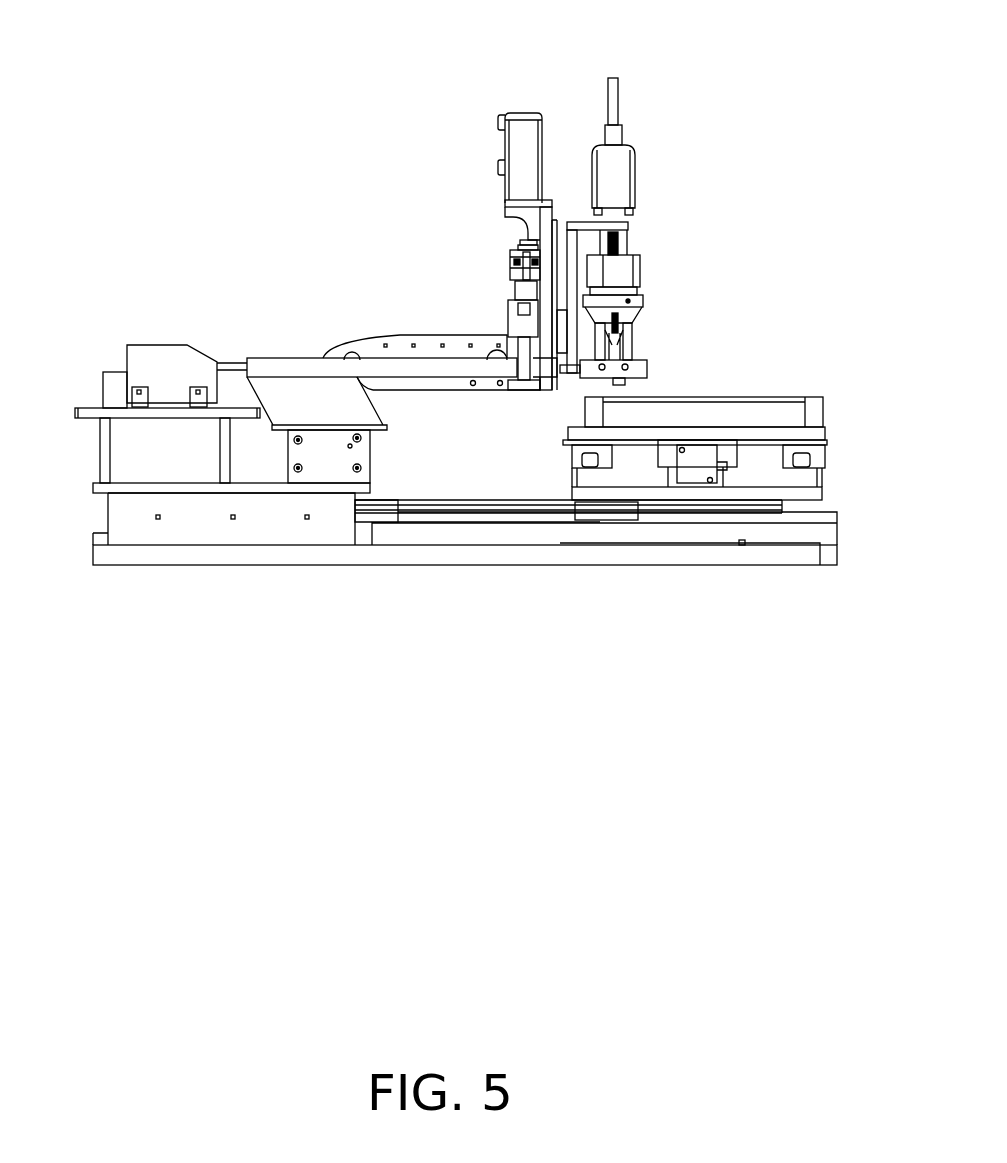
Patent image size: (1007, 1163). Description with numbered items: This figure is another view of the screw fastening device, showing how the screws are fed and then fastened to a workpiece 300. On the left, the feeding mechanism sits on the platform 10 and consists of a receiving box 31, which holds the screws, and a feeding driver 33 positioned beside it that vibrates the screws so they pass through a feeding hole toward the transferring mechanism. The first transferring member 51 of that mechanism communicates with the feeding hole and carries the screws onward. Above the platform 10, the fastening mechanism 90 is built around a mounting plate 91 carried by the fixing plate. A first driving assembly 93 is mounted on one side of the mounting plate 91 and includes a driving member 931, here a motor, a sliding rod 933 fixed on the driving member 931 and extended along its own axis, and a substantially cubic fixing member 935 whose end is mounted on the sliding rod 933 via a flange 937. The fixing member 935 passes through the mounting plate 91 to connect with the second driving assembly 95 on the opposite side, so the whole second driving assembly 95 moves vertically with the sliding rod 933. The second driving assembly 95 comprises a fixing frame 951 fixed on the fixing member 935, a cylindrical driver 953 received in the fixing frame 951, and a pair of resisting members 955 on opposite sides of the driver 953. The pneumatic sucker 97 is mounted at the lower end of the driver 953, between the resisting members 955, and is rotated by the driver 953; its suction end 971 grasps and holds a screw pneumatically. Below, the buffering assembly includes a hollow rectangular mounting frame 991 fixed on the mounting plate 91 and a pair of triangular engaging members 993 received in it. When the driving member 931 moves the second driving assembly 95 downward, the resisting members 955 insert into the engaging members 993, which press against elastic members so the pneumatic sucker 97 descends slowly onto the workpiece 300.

The platform 10 is at (208, 530).
The receiving box 31 is at (163, 353).
The feeding driver 33 is at (110, 380).
The first transferring member 51 is at (292, 370).
The fastening mechanism 90 is at (521, 72).
The mounting plate 91 is at (552, 260).
The first driving assembly 93 is at (469, 251).
The driving member 931 is at (522, 155).
The sliding rod 933 is at (513, 240).
The fixing member 935 is at (545, 303).
The flange 937 is at (478, 335).
The second driving assembly 95 is at (675, 233).
The fixing frame 951 is at (572, 253).
The driver 953 is at (618, 178).
The resisting members 955 is at (632, 333).
The pneumatic sucker 97 is at (630, 352).
The suction end 971 is at (618, 380).
The mounting frame 991 is at (586, 368).
The engaging members 993 is at (600, 357).
The workpiece 300 is at (775, 405).